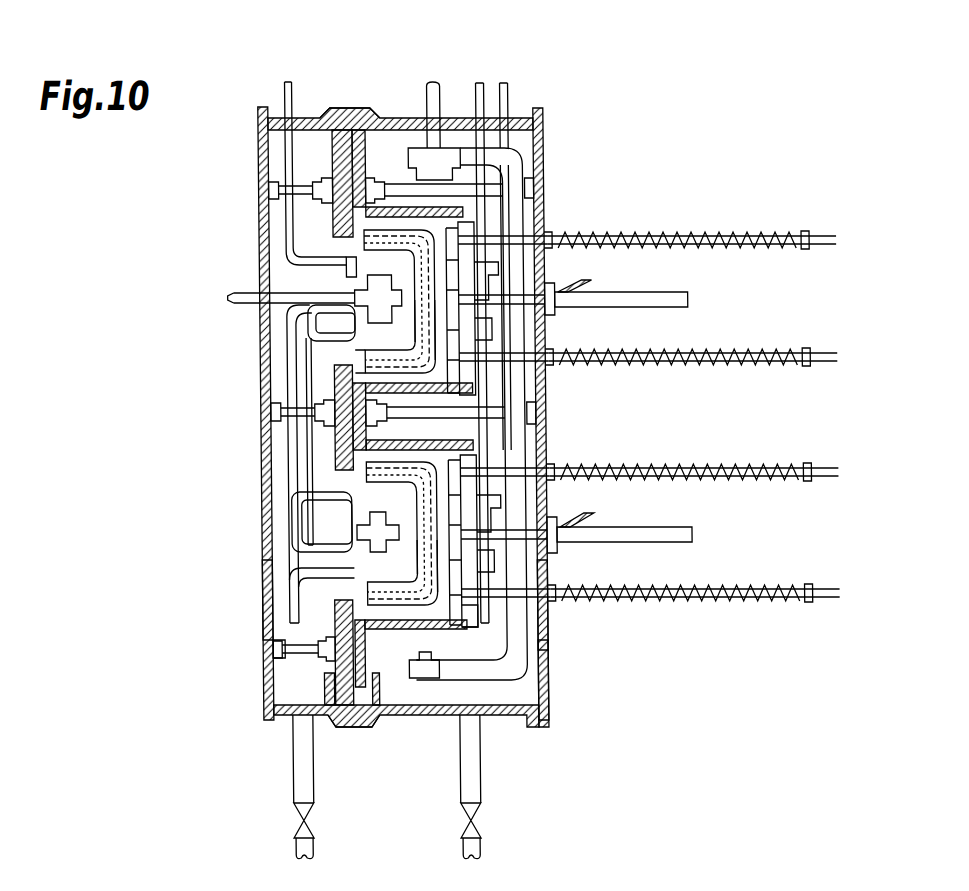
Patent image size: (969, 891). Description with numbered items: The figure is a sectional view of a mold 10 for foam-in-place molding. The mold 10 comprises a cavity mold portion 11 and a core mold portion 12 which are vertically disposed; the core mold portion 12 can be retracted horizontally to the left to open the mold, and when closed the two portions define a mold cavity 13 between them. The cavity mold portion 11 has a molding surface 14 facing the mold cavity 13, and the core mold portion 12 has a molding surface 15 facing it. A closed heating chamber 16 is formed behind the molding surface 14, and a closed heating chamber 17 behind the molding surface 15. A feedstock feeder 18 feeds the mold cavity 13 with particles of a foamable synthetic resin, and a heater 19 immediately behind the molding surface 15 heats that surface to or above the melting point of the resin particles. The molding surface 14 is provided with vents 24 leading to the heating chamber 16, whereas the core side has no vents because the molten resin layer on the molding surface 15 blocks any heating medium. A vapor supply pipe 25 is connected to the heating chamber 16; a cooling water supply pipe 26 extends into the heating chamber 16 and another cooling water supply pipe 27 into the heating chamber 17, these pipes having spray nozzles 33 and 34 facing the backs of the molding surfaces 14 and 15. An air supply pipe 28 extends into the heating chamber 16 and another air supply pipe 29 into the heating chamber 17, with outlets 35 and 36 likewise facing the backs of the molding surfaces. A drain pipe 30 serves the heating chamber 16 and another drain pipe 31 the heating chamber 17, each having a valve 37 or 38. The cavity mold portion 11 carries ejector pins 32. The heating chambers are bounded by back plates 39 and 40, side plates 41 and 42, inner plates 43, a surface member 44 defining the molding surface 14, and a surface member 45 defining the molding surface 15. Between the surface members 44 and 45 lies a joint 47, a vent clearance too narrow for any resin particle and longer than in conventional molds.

The mold 10 is at (257, 172).
The cavity mold portion 11 is at (544, 660).
The core mold portion 12 is at (267, 655).
The mold cavity 13 is at (576, 280).
The molding surface 14 is at (500, 226).
The molding surface 15 is at (422, 265).
The heating chamber 16 is at (494, 693).
The heating chamber 17 is at (281, 690).
The feedstock feeder 18 is at (663, 300).
The heater 19 is at (420, 333).
The vents 24 is at (462, 560).
The vapor supply pipe 25 is at (507, 86).
The cooling water supply pipe 26 is at (477, 90).
The cooling water supply pipe 27 is at (284, 92).
The air supply pipe 28 is at (427, 100).
The air supply pipe 29 is at (231, 307).
The drain pipe 30 is at (473, 840).
The drain pipe 31 is at (305, 845).
The ejector pins 32 is at (766, 250).
The spray nozzles 33 is at (473, 323).
The spray nozzles 34 is at (341, 264).
The outlets 35 is at (410, 186).
The outlets 36 is at (354, 330).
The valve 37 is at (471, 817).
The valve 38 is at (303, 818).
The back plate 39 is at (548, 618).
The back plate 40 is at (262, 604).
The side plate 41 is at (366, 110).
The side plate 42 is at (336, 108).
The inner plates 43 is at (331, 228).
The surface member 44 is at (468, 628).
The surface member 45 is at (345, 353).
The joint 47 is at (363, 635).